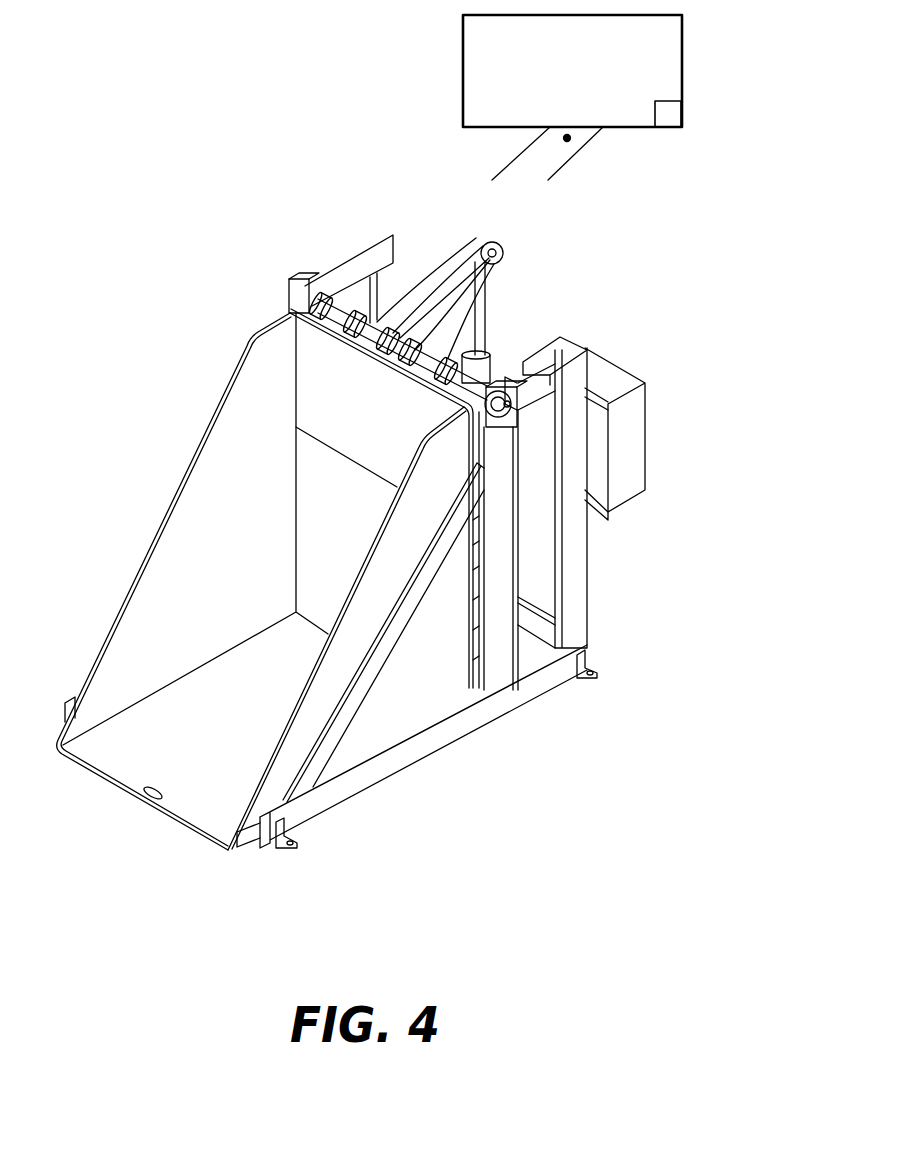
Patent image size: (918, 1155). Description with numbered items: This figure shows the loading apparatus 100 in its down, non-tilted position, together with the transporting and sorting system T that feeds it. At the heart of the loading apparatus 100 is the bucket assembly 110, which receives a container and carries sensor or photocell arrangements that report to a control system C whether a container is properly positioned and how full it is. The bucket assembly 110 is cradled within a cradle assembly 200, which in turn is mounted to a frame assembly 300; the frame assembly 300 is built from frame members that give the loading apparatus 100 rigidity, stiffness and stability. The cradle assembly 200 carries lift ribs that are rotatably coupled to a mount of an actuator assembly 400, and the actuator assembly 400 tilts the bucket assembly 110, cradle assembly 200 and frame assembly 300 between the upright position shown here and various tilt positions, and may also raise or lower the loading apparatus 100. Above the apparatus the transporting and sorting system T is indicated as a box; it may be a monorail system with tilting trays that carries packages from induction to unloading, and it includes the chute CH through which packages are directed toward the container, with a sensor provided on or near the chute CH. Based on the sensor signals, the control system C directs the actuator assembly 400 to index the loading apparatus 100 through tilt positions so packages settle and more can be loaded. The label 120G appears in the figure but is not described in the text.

The loading apparatus 100 is at (720, 338).
The bucket assembly 110 is at (258, 311).
The cradle assembly 200 is at (456, 243).
The frame assembly 300 is at (612, 566).
The actuator assembly 400 is at (500, 314).
The control system C is at (638, 434).
The transporting and sorting system T is at (682, 90).
The chute sensor/gate 120G is at (567, 138).
The chute CH is at (585, 148).